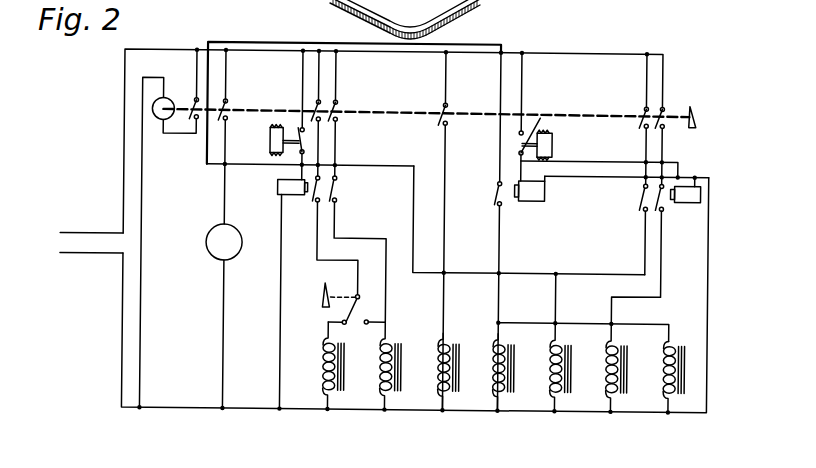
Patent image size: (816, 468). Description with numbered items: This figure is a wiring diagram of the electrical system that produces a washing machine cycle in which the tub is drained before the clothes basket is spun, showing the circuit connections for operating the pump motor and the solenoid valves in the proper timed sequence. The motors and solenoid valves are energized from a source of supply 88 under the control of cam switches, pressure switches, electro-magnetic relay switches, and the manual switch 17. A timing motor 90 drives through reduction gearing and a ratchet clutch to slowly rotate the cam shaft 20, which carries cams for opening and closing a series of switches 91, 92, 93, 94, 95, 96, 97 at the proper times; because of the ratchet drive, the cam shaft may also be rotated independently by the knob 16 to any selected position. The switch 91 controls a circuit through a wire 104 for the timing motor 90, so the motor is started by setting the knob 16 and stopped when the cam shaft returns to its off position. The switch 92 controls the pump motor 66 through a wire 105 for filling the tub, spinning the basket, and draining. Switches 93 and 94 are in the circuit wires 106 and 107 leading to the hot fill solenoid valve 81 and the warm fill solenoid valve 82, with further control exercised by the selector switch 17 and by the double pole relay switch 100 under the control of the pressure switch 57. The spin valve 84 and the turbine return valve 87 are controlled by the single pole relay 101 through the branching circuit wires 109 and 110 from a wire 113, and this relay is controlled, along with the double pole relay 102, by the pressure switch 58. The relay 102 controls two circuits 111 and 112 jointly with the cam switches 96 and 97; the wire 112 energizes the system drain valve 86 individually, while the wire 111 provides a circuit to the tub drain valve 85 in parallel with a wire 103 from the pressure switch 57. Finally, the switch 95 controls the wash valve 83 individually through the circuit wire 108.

The knob 16 is at (698, 107).
The manual switch 17 is at (325, 296).
The cam shaft 20 is at (676, 108).
The pressure switch 57 is at (296, 146).
The pressure switch 58 is at (541, 114).
The electric motor 66 is at (220, 249).
The hot fill solenoid valve 81 is at (346, 388).
The warm fill solenoid valve 82 is at (403, 388).
The wash valve 83 is at (461, 388).
The spin valve 84 is at (516, 388).
The tub drain valve 85 is at (573, 388).
The system drain valve 86 is at (629, 388).
The turbine return valve 87 is at (686, 388).
The source of supply 88 is at (70, 243).
The timing motor 90 is at (153, 108).
The switch 91 is at (196, 99).
The switch 92 is at (227, 100).
The switch 93 is at (318, 99).
The switch 94 is at (337, 100).
The switch 95 is at (445, 102).
The switch 96 is at (646, 104).
The switch 97 is at (664, 121).
The double pole relay switch 100 is at (306, 204).
The single pole relay 101 is at (507, 196).
The double pole relay 102 is at (674, 209).
The wire 103 is at (405, 155).
The wire 104 is at (144, 337).
The wire 105 is at (227, 357).
The circuit wire 106 is at (318, 248).
The circuit wire 107 is at (339, 218).
The circuit wire 108 is at (449, 232).
The branching circuit wire 109 is at (504, 251).
The branching circuit wire 110 is at (671, 326).
The wire 111 is at (645, 235).
The wire 112 is at (664, 251).
The wire 113 is at (502, 129).